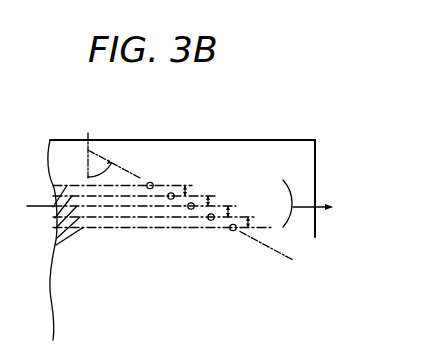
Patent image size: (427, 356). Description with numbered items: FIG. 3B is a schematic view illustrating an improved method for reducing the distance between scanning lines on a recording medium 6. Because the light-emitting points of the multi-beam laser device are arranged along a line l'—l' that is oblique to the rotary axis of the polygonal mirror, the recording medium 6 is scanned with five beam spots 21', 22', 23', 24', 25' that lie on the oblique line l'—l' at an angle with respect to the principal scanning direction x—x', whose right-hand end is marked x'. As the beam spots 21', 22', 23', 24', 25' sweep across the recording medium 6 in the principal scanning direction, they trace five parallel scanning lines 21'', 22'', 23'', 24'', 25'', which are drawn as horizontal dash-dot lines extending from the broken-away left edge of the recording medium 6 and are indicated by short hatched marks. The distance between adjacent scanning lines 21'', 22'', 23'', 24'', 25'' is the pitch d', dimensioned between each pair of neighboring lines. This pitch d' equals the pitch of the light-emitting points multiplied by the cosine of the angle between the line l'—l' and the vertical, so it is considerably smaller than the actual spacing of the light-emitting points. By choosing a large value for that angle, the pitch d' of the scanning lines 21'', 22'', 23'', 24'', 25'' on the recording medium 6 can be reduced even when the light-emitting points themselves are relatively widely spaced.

The recording medium 6 is at (185, 140).
The beam spot 21' is at (135, 224).
The beam spot 22' is at (159, 237).
The beam spot 23' is at (181, 252).
The beam spot 24' is at (213, 252).
The beam spot 25' is at (248, 254).
The scanning line 21'' is at (101, 210).
The scanning line 22'' is at (115, 226).
The scanning line 23'' is at (125, 240).
The scanning line 24'' is at (154, 247).
The scanning line 25'' is at (163, 263).
The pitch of the scanning lines d' is at (228, 194).
The oblique line l' is at (187, 202).
The principal scanning direction x' is at (316, 203).